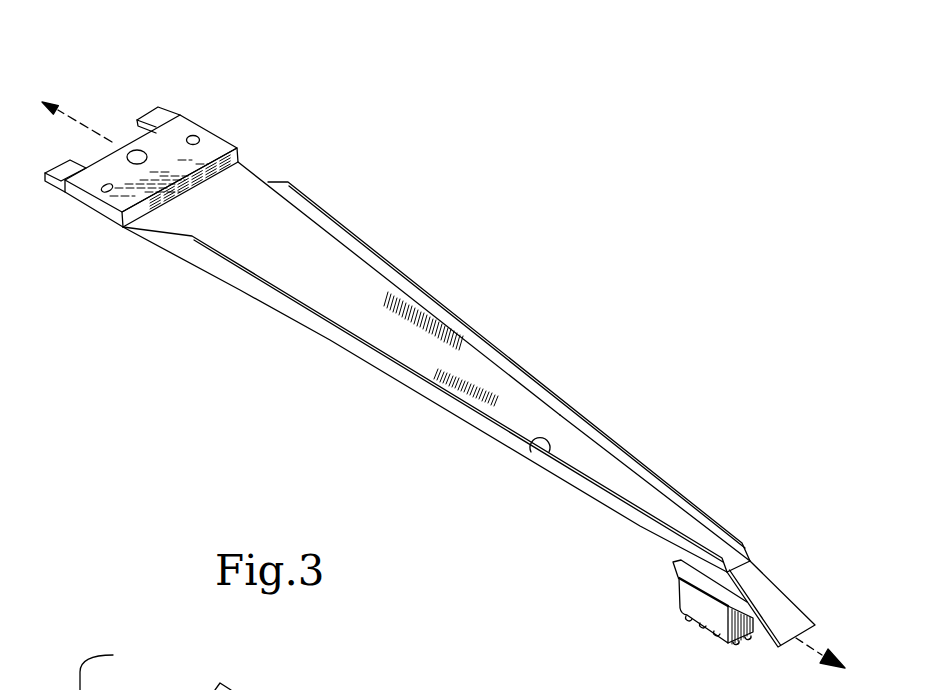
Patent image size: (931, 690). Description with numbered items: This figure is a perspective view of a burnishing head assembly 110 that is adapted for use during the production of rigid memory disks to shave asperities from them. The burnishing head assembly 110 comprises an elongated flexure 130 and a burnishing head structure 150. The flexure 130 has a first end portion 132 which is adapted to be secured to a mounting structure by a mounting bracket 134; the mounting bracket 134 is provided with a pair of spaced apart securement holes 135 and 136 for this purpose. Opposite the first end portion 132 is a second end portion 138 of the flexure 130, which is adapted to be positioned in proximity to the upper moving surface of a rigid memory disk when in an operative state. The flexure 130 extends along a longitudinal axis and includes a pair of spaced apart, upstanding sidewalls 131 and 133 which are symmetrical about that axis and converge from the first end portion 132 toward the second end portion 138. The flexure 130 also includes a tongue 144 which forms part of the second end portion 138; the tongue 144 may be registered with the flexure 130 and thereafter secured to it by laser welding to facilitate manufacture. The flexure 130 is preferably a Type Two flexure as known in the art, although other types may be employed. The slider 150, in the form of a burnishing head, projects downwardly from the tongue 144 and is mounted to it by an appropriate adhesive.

The burnishing head assembly 110 is at (484, 426).
The flexure 130 is at (397, 345).
The sidewall 131 is at (534, 455).
The first end portion 132 is at (292, 237).
The sidewall 133 is at (523, 363).
The mounting bracket 134 is at (158, 148).
The securement hole 135 is at (88, 195).
The securement hole 136 is at (197, 135).
The second end portion 138 is at (615, 468).
The tongue 144 is at (776, 610).
The burnishing head structure 150 is at (712, 610).